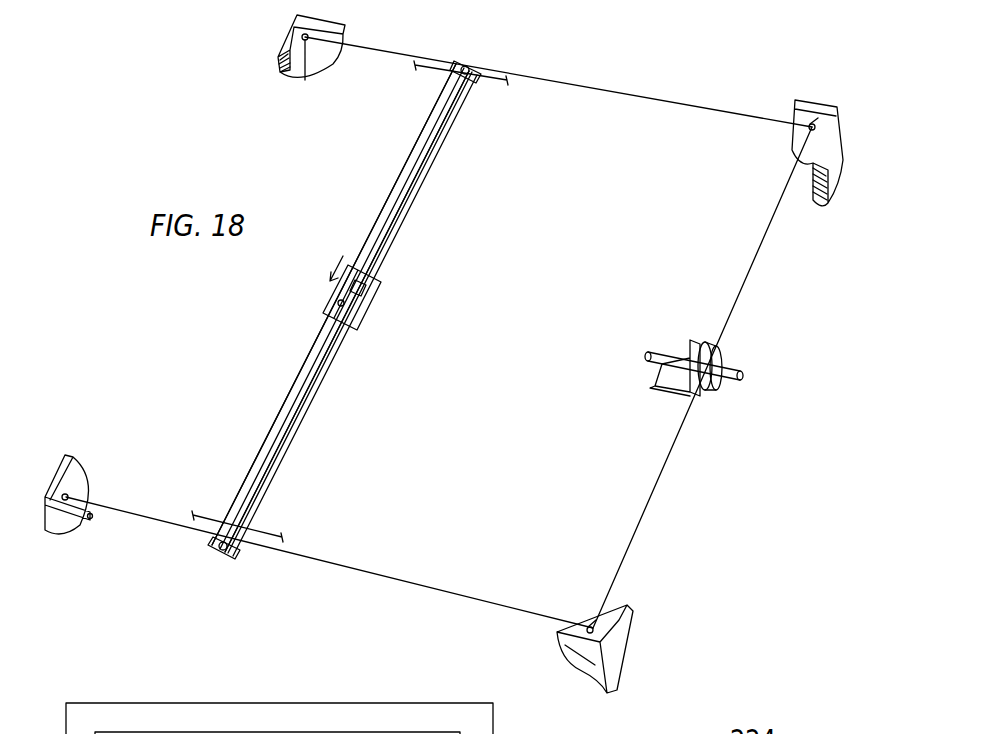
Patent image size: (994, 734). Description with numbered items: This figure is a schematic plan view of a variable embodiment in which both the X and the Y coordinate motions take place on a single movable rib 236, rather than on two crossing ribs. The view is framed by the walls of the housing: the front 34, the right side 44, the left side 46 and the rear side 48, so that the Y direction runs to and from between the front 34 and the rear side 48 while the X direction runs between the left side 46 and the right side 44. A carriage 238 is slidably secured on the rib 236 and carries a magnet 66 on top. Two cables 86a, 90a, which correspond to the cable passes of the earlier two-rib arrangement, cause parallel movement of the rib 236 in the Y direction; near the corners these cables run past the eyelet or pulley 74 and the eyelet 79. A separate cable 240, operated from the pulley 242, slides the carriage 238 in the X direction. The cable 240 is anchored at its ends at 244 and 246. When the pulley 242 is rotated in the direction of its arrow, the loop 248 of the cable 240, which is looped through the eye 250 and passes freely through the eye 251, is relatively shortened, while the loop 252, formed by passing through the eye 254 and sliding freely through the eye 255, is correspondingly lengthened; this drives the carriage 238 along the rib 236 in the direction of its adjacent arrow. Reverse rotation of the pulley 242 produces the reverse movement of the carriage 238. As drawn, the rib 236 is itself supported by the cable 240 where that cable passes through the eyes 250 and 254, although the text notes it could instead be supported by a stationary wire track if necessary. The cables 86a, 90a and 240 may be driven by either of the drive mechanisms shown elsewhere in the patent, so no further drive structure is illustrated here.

The front 34 is at (628, 610).
The right side 44 is at (813, 102).
The left side 46 is at (566, 650).
The rear side 48 is at (60, 472).
The magnet 66 is at (367, 284).
The eyelet or pulley 74 is at (590, 627).
The eyelet 79 is at (808, 128).
The cable 86a is at (483, 77).
The cable 90a is at (208, 514).
The movable rib 236 is at (306, 410).
The carriage 238 is at (362, 302).
The cable 240 is at (363, 566).
The pulley 242 is at (722, 348).
The anchor 244 is at (302, 37).
The anchor 246 is at (68, 497).
The loop 248 is at (296, 402).
The eye 250 is at (226, 551).
The eye 251 is at (338, 300).
The loop 252 is at (404, 172).
The eye 254 is at (466, 64).
The eye 255 is at (354, 262).